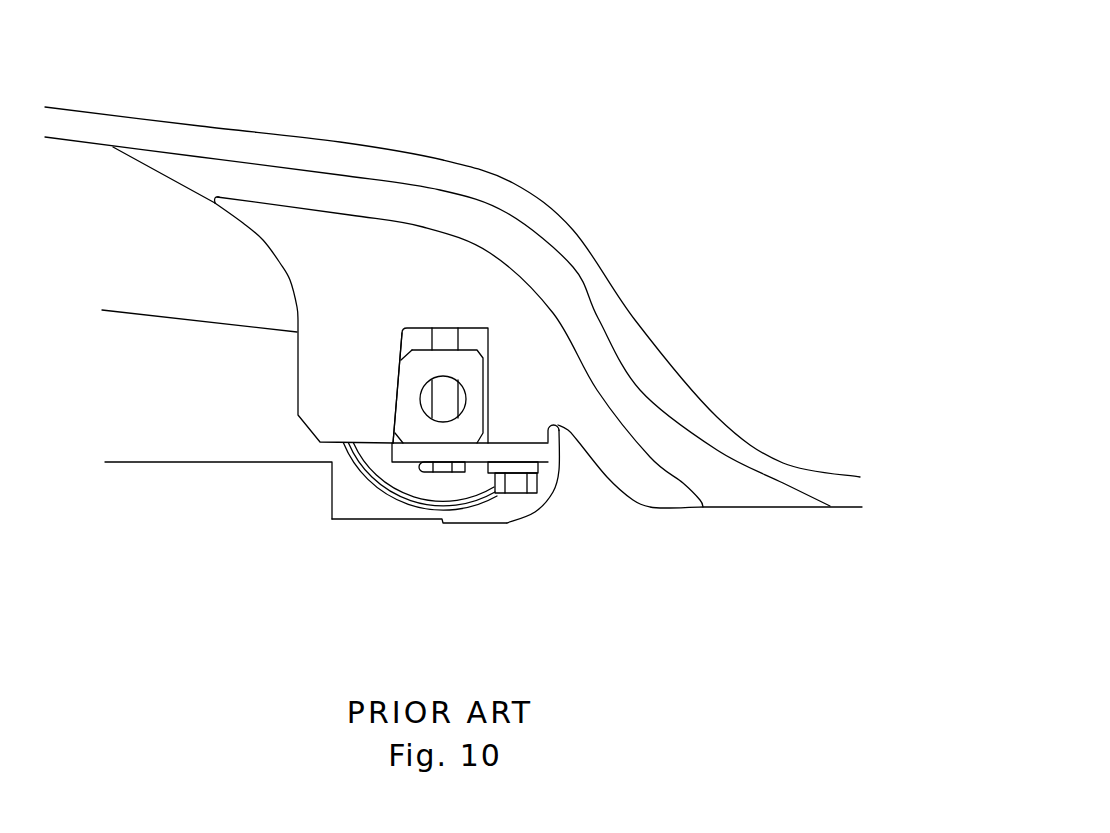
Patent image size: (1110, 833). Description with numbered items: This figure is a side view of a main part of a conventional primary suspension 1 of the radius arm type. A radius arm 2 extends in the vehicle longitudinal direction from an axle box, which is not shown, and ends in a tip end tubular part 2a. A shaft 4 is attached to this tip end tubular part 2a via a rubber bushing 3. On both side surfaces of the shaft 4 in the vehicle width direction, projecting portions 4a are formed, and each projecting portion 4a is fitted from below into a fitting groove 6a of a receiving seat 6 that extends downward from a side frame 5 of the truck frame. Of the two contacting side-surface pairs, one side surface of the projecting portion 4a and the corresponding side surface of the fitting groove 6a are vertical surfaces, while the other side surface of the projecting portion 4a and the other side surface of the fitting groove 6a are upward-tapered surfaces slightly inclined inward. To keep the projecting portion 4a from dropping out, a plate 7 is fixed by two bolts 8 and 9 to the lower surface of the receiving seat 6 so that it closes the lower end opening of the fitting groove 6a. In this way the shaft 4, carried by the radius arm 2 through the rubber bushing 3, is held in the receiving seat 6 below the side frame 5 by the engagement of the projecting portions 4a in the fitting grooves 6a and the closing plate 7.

The primary suspension 1 is at (452, 270).
The radius arm 2 is at (483, 513).
The tip end tubular part 2a is at (382, 520).
The rubber bushing 3 is at (390, 455).
The shaft 4 is at (561, 441).
The projecting portion 4a is at (475, 380).
The side frame 5 is at (208, 143).
The receiving seat 6 is at (310, 272).
The fitting groove 6a is at (393, 400).
The plate 7 is at (380, 462).
The bolt 8 is at (438, 472).
The bolt 9 is at (513, 497).